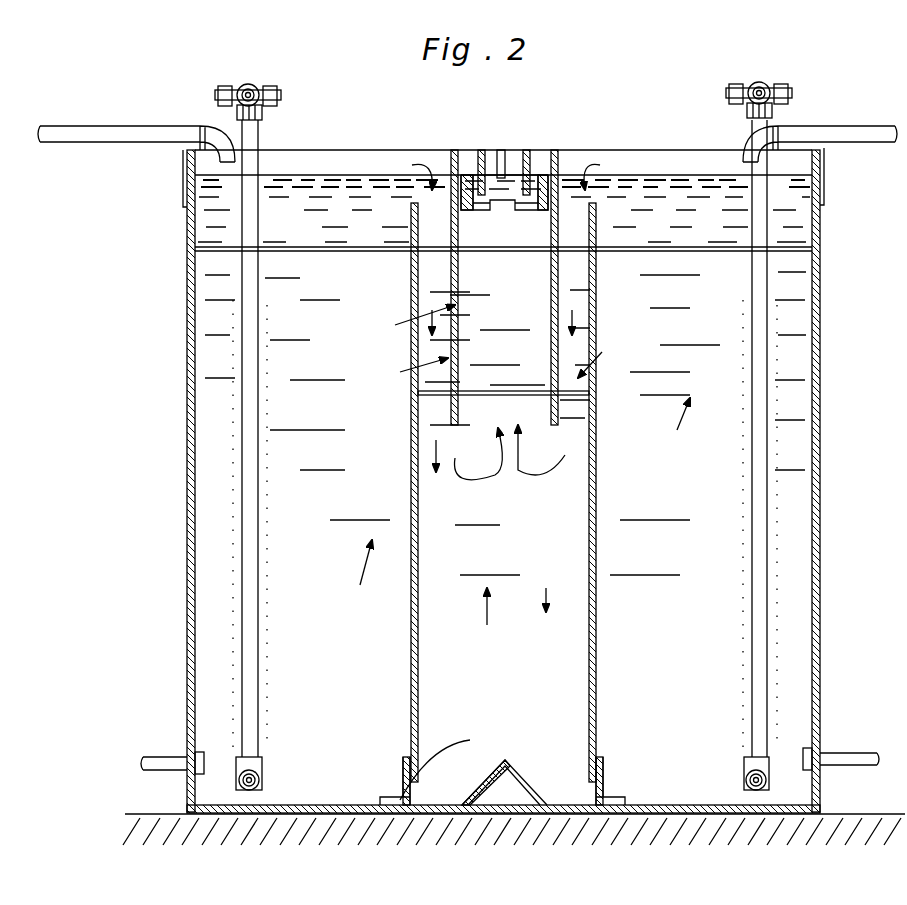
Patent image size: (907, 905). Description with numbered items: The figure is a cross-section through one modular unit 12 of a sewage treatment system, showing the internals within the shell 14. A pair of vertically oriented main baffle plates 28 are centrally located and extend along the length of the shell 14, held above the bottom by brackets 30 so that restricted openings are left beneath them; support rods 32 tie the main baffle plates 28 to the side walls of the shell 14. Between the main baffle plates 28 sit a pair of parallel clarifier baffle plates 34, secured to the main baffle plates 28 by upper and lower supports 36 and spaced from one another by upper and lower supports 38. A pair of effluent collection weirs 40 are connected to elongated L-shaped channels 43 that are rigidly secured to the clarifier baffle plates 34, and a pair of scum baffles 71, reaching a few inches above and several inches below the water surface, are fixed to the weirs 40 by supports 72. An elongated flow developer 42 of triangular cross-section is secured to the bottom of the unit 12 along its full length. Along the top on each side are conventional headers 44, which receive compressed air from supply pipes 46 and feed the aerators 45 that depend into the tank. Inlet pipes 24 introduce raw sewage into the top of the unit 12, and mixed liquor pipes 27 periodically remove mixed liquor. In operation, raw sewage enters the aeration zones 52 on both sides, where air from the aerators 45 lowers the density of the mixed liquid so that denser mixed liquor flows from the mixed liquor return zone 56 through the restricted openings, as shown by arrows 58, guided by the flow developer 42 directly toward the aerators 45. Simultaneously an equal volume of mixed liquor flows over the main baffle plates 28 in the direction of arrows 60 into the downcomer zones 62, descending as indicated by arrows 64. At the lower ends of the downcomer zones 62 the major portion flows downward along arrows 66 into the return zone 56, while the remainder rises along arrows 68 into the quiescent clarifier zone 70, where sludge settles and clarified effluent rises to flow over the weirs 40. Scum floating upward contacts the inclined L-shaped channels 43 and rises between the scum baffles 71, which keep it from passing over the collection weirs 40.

The modular unit 12 is at (614, 145).
The shell 14 is at (820, 428).
The inlet pipe 24 is at (146, 132).
The mixed liquor pipe 27 is at (150, 757).
The main baffle plate 28 is at (605, 590).
The bracket 30 is at (395, 770).
The support rod 32 is at (330, 250).
The clarifier baffle plate 34 is at (455, 350).
The upper and lower supports 36 is at (410, 262).
The upper and lower supports 38 is at (512, 225).
The effluent collection weir 40 is at (502, 169).
The flow developer 42 is at (475, 803).
The L-shaped channel 43 is at (478, 218).
The header 44 is at (248, 82).
The aerator 45 is at (260, 782).
The supply pipe 46 is at (250, 590).
The aeration zone 52 is at (525, 496).
The mixed liquor return zone 56 is at (485, 615).
The arrows 58 is at (462, 770).
The arrows 60 is at (415, 195).
The downcomer zone 62 is at (400, 372).
The arrows 64 is at (432, 312).
The arrows 66 is at (436, 440).
The arrows 68 is at (462, 458).
The clarifier zone 70 is at (395, 325).
The scum baffle 71 is at (503, 150).
The supports 72 is at (480, 150).